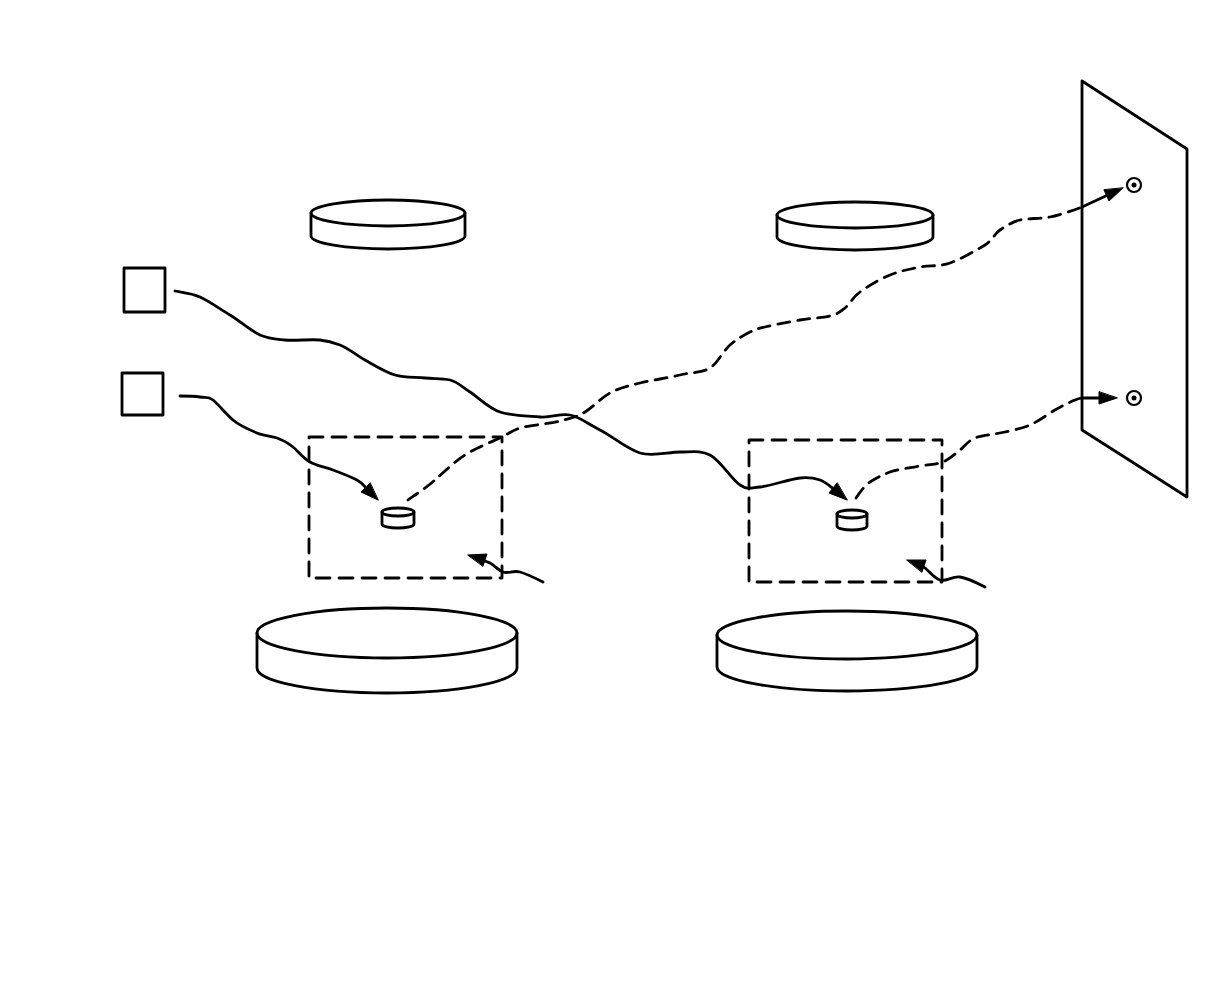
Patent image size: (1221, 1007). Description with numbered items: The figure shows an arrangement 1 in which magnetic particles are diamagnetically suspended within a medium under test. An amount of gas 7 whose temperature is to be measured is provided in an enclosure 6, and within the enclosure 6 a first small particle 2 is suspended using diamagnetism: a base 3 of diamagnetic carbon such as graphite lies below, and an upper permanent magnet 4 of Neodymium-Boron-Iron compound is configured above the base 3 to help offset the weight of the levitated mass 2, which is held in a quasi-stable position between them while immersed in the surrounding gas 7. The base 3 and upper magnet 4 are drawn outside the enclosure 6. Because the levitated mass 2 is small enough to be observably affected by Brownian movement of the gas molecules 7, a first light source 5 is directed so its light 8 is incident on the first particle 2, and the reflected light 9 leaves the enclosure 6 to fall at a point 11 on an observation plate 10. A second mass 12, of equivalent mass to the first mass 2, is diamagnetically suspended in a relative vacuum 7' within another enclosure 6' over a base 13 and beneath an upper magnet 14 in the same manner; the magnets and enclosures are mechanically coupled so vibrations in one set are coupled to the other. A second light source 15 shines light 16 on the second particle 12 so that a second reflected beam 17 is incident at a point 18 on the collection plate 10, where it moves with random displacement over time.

The optical system 1 is at (258, 100).
The first particle 2 is at (415, 518).
The base 3 is at (517, 660).
The upper permanent magnet 4 is at (466, 222).
The first light source 5 is at (121, 395).
The enclosure 6 is at (405, 507).
The another enclosure 6' is at (845, 511).
The gas 7 is at (521, 576).
The relative vacuum 7' is at (964, 579).
The incident light 8 is at (223, 408).
The reflected light 9 is at (725, 355).
The observation plate 10 is at (1130, 112).
The point 11 is at (1133, 193).
The second mass 12 is at (837, 516).
The base 13 is at (977, 648).
The upper magnet 14 is at (777, 226).
The second light source 15 is at (122, 285).
The shined light 16 is at (462, 382).
The second reflected beam 17 is at (990, 435).
The point 18 is at (1130, 390).